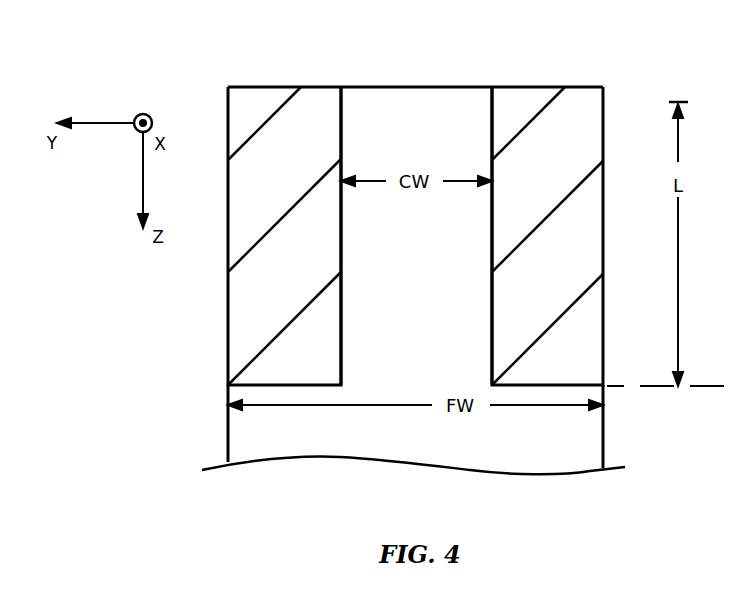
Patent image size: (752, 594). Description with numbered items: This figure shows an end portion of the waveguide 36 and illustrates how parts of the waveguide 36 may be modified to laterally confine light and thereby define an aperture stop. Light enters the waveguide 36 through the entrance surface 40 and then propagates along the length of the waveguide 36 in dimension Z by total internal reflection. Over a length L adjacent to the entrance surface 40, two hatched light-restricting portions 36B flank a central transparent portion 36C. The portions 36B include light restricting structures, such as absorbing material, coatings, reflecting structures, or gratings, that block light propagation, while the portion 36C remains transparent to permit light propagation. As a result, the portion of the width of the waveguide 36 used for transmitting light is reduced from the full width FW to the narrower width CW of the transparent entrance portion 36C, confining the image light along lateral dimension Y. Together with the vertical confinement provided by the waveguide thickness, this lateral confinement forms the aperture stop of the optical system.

The waveguide 36 is at (228, 438).
The light-restricting portions of waveguide 36B is at (246, 97).
The transparent entrance portion of waveguide 36C is at (367, 97).
The entrance surface of waveguide 40 is at (452, 87).